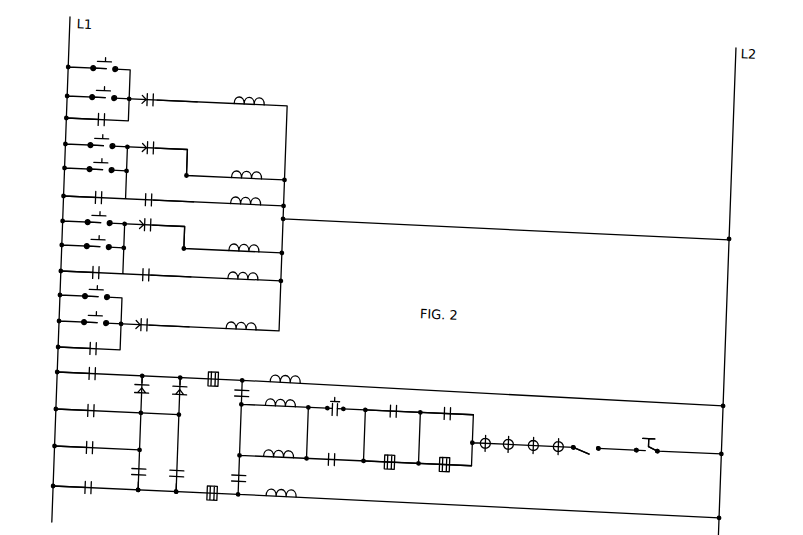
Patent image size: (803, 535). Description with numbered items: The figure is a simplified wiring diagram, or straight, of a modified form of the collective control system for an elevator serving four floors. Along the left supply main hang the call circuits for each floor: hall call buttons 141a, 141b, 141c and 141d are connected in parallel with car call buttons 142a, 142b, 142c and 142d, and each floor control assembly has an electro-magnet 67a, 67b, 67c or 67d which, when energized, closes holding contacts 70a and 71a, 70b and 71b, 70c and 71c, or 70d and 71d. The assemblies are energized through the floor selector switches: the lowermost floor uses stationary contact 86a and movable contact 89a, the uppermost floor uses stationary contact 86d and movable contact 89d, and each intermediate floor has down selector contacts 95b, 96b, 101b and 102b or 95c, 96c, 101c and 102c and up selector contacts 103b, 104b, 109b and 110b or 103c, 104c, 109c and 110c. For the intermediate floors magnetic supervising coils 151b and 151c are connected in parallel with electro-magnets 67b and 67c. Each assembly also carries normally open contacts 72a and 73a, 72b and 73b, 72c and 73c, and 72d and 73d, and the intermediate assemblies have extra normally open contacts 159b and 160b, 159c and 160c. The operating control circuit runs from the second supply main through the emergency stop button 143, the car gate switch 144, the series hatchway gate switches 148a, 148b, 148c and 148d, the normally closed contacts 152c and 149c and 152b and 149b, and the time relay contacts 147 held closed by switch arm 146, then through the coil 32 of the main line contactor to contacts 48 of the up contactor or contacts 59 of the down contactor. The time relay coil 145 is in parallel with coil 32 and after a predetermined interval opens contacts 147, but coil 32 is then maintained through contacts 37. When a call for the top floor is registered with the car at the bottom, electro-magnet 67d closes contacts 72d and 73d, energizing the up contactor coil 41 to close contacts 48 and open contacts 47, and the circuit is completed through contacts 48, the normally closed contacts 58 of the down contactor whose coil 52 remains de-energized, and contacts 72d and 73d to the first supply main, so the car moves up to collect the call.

The hall call button 141d is at (100, 59).
The car call button 142d is at (99, 88).
The holding contact 71d is at (98, 112).
The holding contact 70d is at (110, 118).
The stationary contact 86d is at (150, 92).
The contact 89d is at (160, 96).
The electro-magnet 67d is at (258, 90).
The hall call button 141c is at (100, 137).
The contact 110c is at (153, 140).
The stationary up contact 104c is at (160, 143).
The electro-magnet 67c is at (255, 166).
The car call button 142c is at (98, 164).
The holding contact 71c is at (98, 192).
The holding contact 70c is at (102, 200).
The contact 102c is at (152, 192).
The stationary down contact 96c is at (158, 196).
The magnetic coil 151c is at (236, 192).
The hall call button 141b is at (100, 214).
The contact 110b is at (153, 219).
The stationary up contact 104b is at (160, 220).
The electro-magnet 67b is at (255, 240).
The car call button 142b is at (98, 240).
The holding contact 71b is at (98, 268).
The holding contact 70b is at (102, 275).
The contact 102b is at (152, 266).
The stationary down contact 96b is at (158, 271).
The magnetic coil 151b is at (236, 268).
The hall call button 141a is at (100, 290).
The car call button 142a is at (98, 315).
The stationary contact 86a is at (152, 318).
The contact 89a is at (160, 321).
The electro-magnet 67a is at (255, 318).
The holding contact 71a is at (98, 346).
The holding contact 70a is at (102, 351).
The contact 73d is at (96, 376).
The contact 72d is at (108, 376).
The contact 73c is at (96, 412).
The contact 72c is at (108, 412).
The contact 73b is at (96, 449).
The contact 72b is at (108, 449).
The contact 73a is at (96, 489).
The contact 72a is at (108, 489).
The stationary up contact 103b is at (155, 371).
The contact 109b is at (161, 384).
The stationary up contact 103c is at (193, 371).
The contact 109c is at (198, 385).
The contacts 58 is at (228, 365).
The electro-magnetic coil 41 is at (290, 371).
The contacts 48 is at (250, 389).
The electro-magnetic coil 32 is at (280, 397).
The time relay coil 145 is at (292, 446).
The contacts 59 is at (262, 470).
The contacts 47 is at (233, 493).
The contact 101b is at (155, 488).
The contact 101c is at (193, 489).
The stationary down contact 95b is at (160, 467).
The stationary down contact 95c is at (200, 467).
The electro-magnetic coil 52 is at (310, 490).
The switch arm 146 is at (350, 389).
The contacts 147 is at (349, 404).
The contact 159b is at (404, 393).
The contact 160b is at (410, 392).
The contact 159c is at (458, 393).
The contact 160c is at (465, 392).
The contacts 37 is at (347, 452).
The normally closed contact 152b is at (405, 445).
The normally closed contact 149b is at (402, 452).
The normally closed contact 152c is at (466, 450).
The normally closed contact 149c is at (457, 452).
The hatchway gate switch 148d is at (501, 417).
The hatchway gate switch 148c is at (523, 417).
The hatchway gate switch 148b is at (549, 417).
The hatchway gate switch 148a is at (573, 417).
The car gate switch 144 is at (600, 427).
The emergency stop button 143 is at (666, 412).